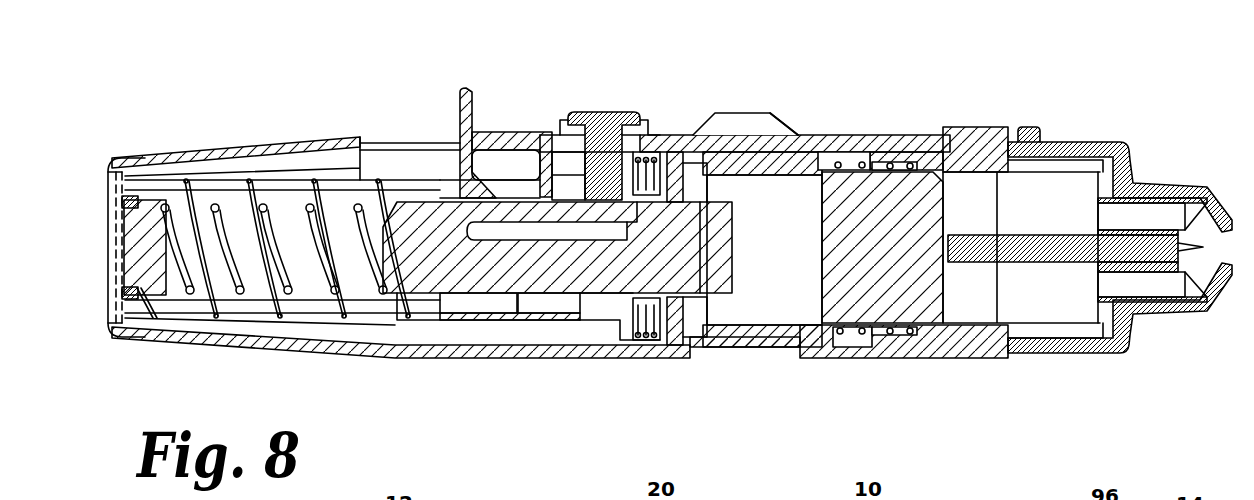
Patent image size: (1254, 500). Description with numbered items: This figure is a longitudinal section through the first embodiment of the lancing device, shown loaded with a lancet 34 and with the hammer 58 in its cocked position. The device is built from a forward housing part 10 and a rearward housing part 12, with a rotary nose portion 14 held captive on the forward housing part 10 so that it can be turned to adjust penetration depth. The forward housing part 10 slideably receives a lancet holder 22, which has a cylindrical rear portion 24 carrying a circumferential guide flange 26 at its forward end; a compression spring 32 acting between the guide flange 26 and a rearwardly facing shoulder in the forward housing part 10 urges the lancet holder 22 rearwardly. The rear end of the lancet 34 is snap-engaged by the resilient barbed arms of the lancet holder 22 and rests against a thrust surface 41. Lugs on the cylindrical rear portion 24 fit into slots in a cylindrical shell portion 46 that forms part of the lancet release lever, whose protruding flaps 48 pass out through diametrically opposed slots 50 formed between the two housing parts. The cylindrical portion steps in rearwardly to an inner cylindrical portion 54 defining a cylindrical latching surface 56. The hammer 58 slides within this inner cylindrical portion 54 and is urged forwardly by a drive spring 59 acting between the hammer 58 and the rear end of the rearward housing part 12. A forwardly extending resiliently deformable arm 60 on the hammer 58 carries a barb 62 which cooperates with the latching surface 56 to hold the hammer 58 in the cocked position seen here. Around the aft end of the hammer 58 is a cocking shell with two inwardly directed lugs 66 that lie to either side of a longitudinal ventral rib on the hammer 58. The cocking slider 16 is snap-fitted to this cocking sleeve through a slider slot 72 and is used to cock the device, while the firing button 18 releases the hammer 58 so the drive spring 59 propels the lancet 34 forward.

The forward housing part 10 is at (948, 127).
The rearward housing part 12 is at (337, 136).
The rotary nose portion 14 is at (1112, 158).
The cocking slider 16 is at (468, 133).
The firing button 18 is at (603, 112).
The lancet holder 22 is at (898, 280).
The cylindrical rear portion 24 is at (742, 328).
The circumferential guide flange 26 is at (848, 332).
The compression spring 32 is at (843, 327).
The lancet 34 is at (1040, 252).
The thrust surface 41 is at (943, 218).
The cylindrical shell portion 46 is at (747, 160).
The protruding flaps 48 is at (727, 125).
The slots 50 is at (788, 133).
The inner cylindrical portion 54 is at (628, 298).
The cylindrical latching surface 56 is at (606, 135).
The hammer 58 is at (432, 270).
The drive spring 59 is at (237, 253).
The resiliently deformable arm 60 is at (257, 193).
The barb 62 is at (590, 198).
The inwardly directed lugs 66 is at (472, 303).
The slider slot 72 is at (412, 141).